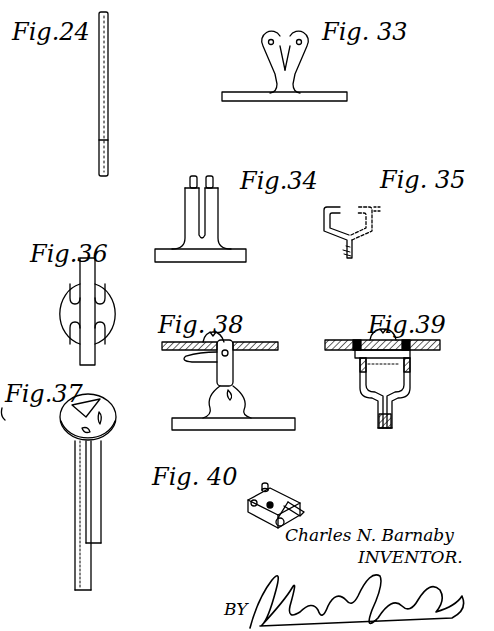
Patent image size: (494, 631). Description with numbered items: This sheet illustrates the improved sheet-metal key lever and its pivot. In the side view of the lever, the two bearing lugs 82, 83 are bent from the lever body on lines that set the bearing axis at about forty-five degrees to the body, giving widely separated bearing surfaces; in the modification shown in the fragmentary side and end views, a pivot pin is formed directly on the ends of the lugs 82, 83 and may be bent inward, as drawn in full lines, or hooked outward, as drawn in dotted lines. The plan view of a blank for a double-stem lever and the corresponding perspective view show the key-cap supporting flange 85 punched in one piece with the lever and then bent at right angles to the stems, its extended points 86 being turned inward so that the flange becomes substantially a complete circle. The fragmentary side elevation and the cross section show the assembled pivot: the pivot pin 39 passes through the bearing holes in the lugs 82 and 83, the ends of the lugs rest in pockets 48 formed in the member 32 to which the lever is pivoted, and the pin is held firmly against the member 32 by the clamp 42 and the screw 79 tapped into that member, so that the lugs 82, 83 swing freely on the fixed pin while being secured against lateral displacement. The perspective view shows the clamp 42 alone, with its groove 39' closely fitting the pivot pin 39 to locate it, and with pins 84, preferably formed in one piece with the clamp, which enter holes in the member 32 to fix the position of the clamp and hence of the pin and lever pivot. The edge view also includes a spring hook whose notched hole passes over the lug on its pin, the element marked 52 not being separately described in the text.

In FIG. 24, the rod 52 is at (100, 103).
In FIG. 33, the bearing lug 82 is at (263, 48).
In FIG. 34, the bearing lug 82 is at (185, 198).
In FIG. 35, the bearing lug 82 is at (372, 224).
In FIG. 38, the bearing lug 82 is at (212, 392).
In FIG. 39, the bearing lug 82 is at (410, 372).
In FIG. 33, the bearing lug 83 is at (305, 50).
In FIG. 34, the bearing lug 83 is at (218, 198).
In FIG. 35, the bearing lug 83 is at (324, 223).
In FIG. 38, the bearing lug 83 is at (235, 366).
In FIG. 39, the bearing lug 83 is at (360, 372).
In FIG. 36, the key-cap supporting flange 85 is at (65, 309).
In FIG. 37, the key-cap supporting flange 85 is at (114, 408).
In FIG. 36, the extended point 86 is at (100, 268).
In FIG. 37, the extended point 86 is at (90, 403).
In FIG. 38, the pocket 48 is at (278, 347).
In FIG. 39, the pocket 48 is at (362, 340).
In FIG. 38, the screw 79 is at (222, 339).
In FIG. 38, the clamp 42 is at (188, 360).
In FIG. 39, the clamp 42 is at (384, 373).
In FIG. 40, the clamp 42 is at (252, 520).
In FIG. 39, the member 32 is at (440, 345).
In FIG. 39, the pivot pin 39 is at (410, 358).
In FIG. 40, the pin 84 is at (250, 500).
In FIG. 40, the groove 39' is at (306, 503).